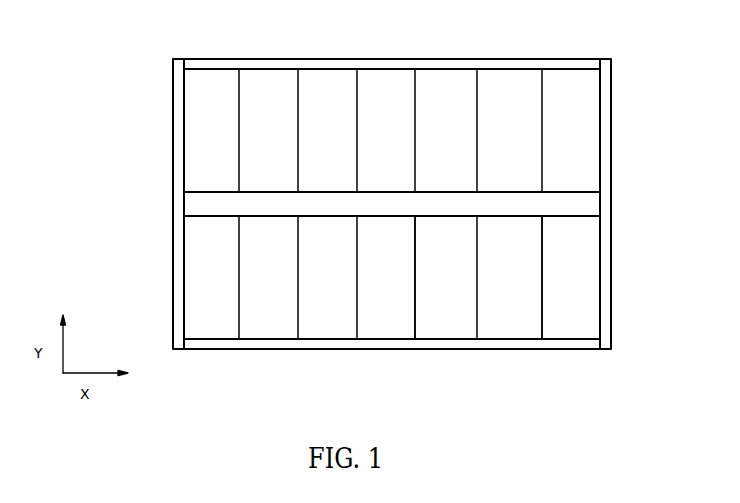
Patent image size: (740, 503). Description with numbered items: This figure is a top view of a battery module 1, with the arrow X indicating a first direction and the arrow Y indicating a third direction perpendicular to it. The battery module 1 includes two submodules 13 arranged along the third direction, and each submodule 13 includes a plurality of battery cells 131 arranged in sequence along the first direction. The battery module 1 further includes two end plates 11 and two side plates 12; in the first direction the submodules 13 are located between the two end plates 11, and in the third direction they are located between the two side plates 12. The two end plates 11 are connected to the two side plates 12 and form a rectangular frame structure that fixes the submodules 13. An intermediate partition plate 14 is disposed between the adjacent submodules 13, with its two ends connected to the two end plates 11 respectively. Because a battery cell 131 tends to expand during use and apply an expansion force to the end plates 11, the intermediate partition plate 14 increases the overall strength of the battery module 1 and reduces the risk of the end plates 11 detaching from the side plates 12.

The battery module 1 is at (128, 24).
The end plate 11 is at (178, 188).
The side plate 12 is at (363, 63).
The submodule 13 is at (600, 263).
The battery cell 131 is at (443, 313).
The intermediate partition plate 14 is at (320, 203).